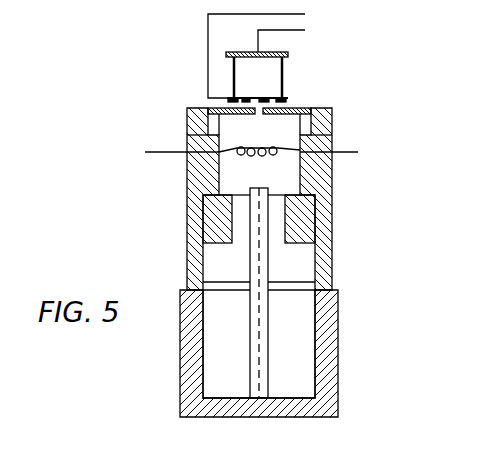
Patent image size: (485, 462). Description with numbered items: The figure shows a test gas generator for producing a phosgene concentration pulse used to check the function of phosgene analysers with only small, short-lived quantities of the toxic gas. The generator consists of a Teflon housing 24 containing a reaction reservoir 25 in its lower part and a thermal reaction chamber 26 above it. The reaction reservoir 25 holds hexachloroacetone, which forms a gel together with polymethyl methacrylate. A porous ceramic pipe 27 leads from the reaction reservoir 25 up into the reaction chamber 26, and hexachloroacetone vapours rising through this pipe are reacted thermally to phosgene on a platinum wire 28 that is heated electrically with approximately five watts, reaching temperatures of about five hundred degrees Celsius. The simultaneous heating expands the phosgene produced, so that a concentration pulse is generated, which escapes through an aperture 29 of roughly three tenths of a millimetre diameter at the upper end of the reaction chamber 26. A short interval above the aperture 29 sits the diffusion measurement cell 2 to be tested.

The diffusion measurement cell 2 is at (278, 72).
The Teflon housing 24 is at (327, 328).
The reaction reservoir 25 is at (295, 367).
The thermal reaction chamber 26 is at (283, 173).
The porous ceramic pipe 27 is at (262, 268).
The platinum wire 28 is at (275, 143).
The aperture 29 is at (262, 108).